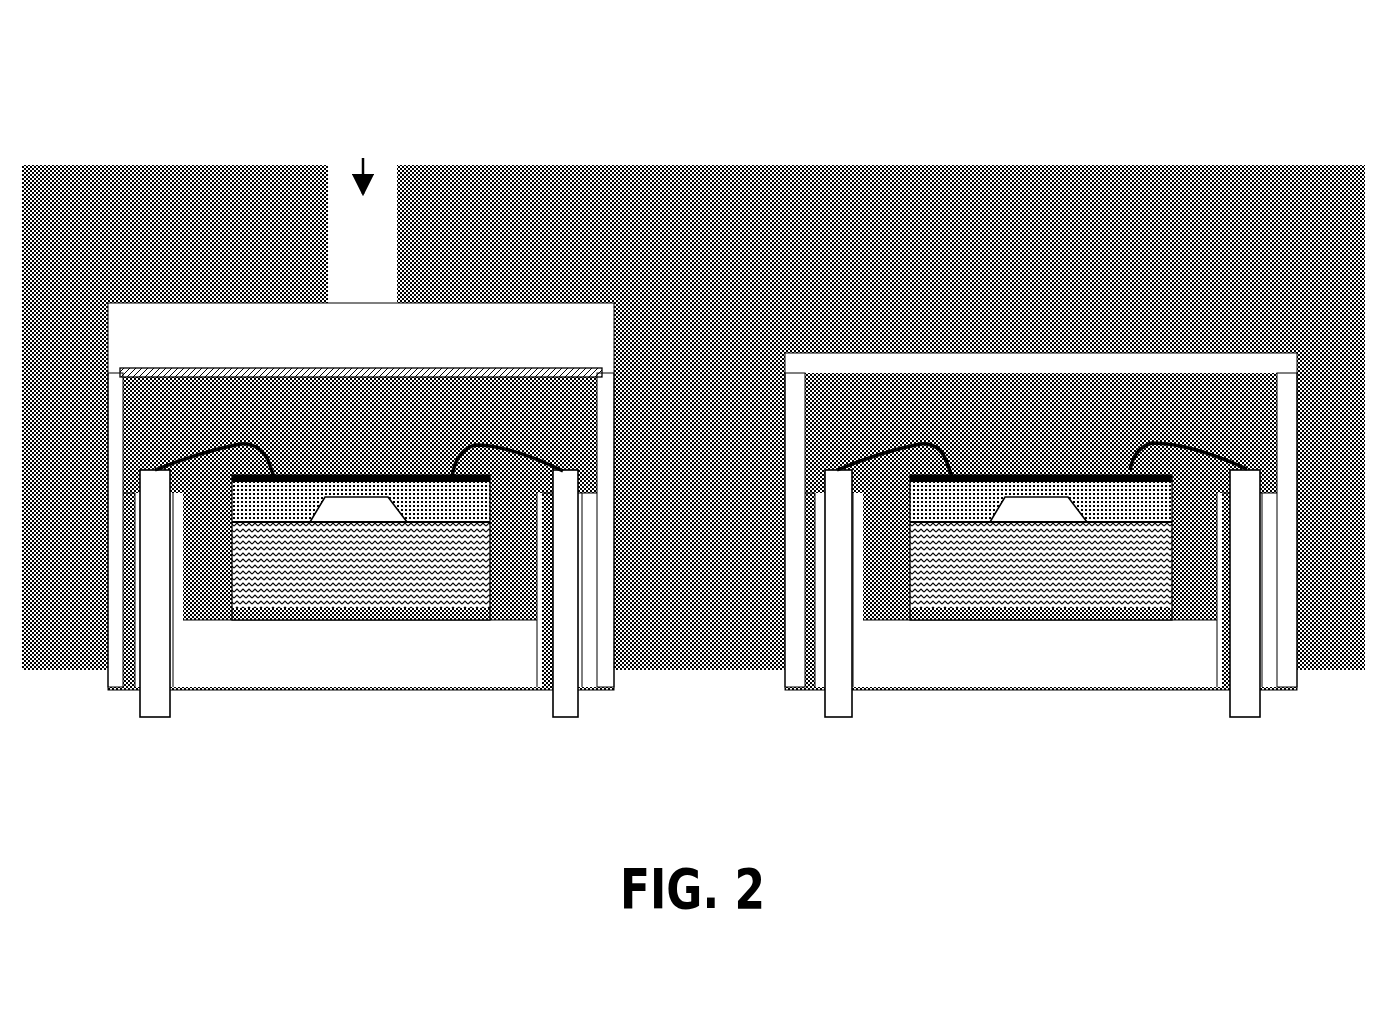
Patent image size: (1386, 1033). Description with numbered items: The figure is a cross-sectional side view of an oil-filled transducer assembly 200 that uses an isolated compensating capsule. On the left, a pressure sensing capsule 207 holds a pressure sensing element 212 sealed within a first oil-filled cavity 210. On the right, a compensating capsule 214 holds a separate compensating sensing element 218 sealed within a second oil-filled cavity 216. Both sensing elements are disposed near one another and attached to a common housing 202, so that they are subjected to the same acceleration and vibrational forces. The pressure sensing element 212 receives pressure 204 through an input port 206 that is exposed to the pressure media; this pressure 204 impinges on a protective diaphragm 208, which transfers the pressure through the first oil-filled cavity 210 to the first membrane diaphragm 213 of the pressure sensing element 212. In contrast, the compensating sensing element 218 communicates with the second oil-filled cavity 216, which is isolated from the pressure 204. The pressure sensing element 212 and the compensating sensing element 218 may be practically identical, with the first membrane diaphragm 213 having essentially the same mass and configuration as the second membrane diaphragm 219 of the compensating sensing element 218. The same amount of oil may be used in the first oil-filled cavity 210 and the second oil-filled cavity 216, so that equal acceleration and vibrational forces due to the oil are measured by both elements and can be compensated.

The oil-filled transducer assembly 200 is at (700, 92).
The common housing 202 is at (693, 417).
The pressure 204 is at (350, 157).
The input port 206 is at (361, 493).
The pressure sensing capsule 207 is at (221, 282).
The protective diaphragm 208 is at (269, 366).
The first oil-filled cavity 210 is at (507, 437).
The pressure sensing element 212 is at (361, 547).
The first membrane diaphragm 213 is at (362, 485).
The compensating capsule 214 is at (1016, 318).
The second oil-filled cavity 216 is at (1188, 432).
The compensating sensing element 218 is at (1041, 547).
The second membrane diaphragm 219 is at (1040, 485).